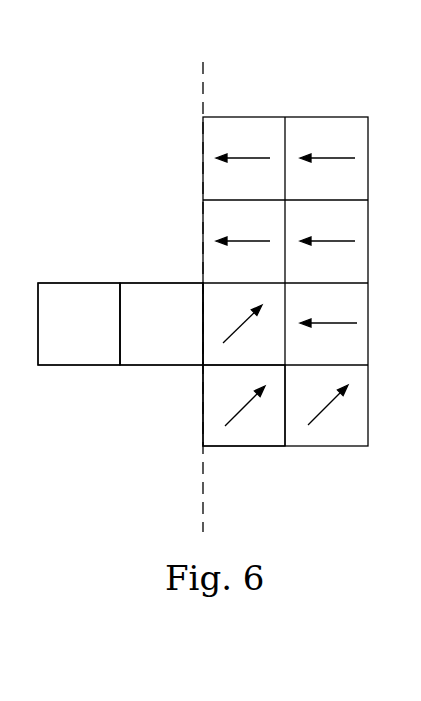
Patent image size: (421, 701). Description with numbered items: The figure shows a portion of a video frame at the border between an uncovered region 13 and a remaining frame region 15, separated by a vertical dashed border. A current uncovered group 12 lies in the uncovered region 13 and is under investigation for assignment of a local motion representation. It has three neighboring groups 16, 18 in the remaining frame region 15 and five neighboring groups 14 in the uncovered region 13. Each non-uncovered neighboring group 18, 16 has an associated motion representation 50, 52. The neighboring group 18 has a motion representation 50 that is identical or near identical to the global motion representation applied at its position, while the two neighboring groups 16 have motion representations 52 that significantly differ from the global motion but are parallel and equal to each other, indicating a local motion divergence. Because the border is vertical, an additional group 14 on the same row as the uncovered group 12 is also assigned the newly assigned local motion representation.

The current uncovered group 12 is at (163, 366).
The uncovered region 13 is at (109, 84).
The neighboring group present in the uncovered region 14 is at (80, 366).
The remaining frame region 15 is at (294, 81).
The neighboring group 16 is at (245, 447).
The neighboring group 18 is at (201, 246).
The motion representation 50 is at (250, 241).
The motion representation 52 is at (234, 414).